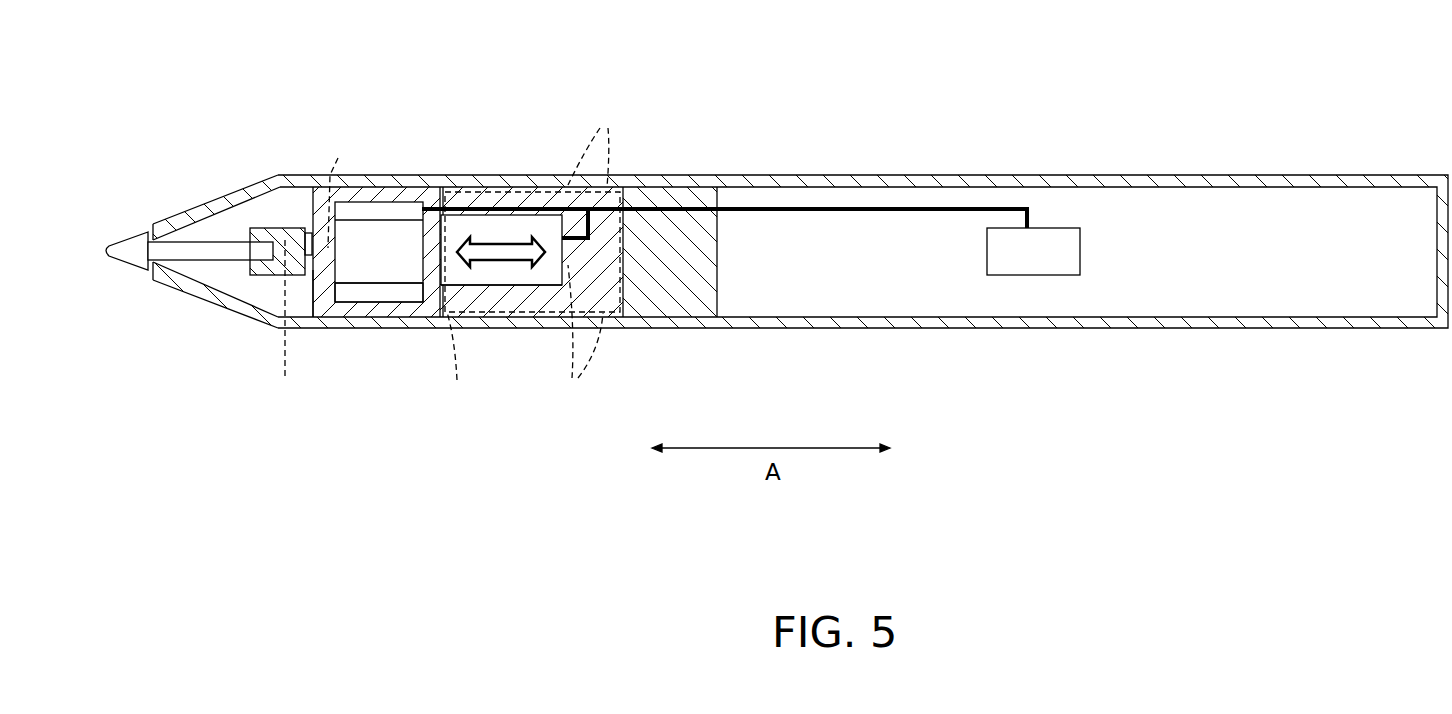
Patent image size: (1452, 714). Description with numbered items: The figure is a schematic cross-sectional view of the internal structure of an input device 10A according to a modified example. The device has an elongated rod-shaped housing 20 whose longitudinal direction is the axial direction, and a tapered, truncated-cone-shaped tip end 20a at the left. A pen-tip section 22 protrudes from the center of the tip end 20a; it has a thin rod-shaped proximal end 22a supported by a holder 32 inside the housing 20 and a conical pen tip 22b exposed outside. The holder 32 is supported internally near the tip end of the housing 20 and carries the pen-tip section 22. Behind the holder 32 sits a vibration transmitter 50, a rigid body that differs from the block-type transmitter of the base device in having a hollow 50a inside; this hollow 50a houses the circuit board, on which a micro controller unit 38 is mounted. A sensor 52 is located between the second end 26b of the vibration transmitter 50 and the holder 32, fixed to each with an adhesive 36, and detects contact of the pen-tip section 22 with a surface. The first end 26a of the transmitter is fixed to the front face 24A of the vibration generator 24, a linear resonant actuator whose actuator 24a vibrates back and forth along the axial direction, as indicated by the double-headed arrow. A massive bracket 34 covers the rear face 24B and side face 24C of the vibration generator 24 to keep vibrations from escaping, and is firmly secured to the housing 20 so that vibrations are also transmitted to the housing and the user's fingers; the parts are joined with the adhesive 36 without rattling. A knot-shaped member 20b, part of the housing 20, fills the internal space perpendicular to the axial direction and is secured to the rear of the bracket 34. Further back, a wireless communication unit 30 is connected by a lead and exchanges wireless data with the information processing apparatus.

The input device 10A is at (198, 41).
The housing 20 is at (1138, 170).
The tip end 20a is at (205, 203).
The knot-shaped member 20b is at (665, 232).
The pen-tip section 22 is at (179, 263).
The proximal end 22a is at (266, 262).
The pen tip 22b is at (131, 258).
The vibration generator 24 is at (708, 266).
The front face 24A is at (417, 240).
The rear face 24B is at (565, 265).
The side face 24C is at (520, 282).
The actuator 24a is at (522, 273).
The first end 26a is at (465, 195).
The second end 26b is at (312, 200).
The wireless communication unit 30 is at (1047, 222).
The holder 32 is at (262, 228).
The bracket 34 is at (494, 185).
The adhesive 36 is at (443, 254).
The micro controller unit 38 is at (378, 272).
The vibration transmitter 50 is at (384, 253).
The hollow 50a is at (410, 292).
The sensor 52 is at (320, 295).